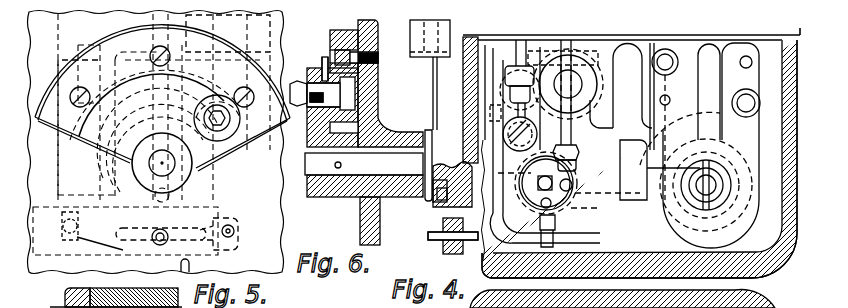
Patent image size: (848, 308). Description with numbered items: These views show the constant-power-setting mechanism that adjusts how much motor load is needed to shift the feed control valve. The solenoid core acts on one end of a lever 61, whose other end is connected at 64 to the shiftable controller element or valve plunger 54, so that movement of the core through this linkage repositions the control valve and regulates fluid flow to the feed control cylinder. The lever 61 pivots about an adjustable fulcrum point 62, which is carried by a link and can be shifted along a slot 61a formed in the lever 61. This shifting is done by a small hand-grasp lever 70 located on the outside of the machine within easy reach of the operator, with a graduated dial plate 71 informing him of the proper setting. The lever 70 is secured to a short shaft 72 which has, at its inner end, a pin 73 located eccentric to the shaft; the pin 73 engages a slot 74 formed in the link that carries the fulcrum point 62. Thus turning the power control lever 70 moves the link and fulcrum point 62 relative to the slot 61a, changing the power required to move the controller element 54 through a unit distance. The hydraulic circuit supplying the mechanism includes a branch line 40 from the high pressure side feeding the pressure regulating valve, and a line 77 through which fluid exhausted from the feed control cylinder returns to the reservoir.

In FIG. 4, the branch line 40 is at (521, 20).
In FIG. 5, the valve plunger 54 is at (58, 200).
In FIG. 5, the lever 61 is at (210, 218).
In FIG. 5, the slot 61a is at (192, 252).
In FIG. 5, the fulcrum point 62 is at (155, 228).
In FIG. 5, the connection point 64 is at (62, 230).
In FIG. 5, the hand-grasp lever 70 is at (240, 118).
In FIG. 6, the hand-grasp lever 70 is at (311, 70).
In FIG. 5, the graduated dial plate 71 is at (232, 38).
In FIG. 6, the graduated dial plate 71 is at (348, 28).
In FIG. 6, the short shaft 72 is at (364, 164).
In FIG. 6, the pin 73 is at (438, 202).
In FIG. 6, the slot 74 is at (433, 200).
In FIG. 4, the line 77 is at (572, 26).